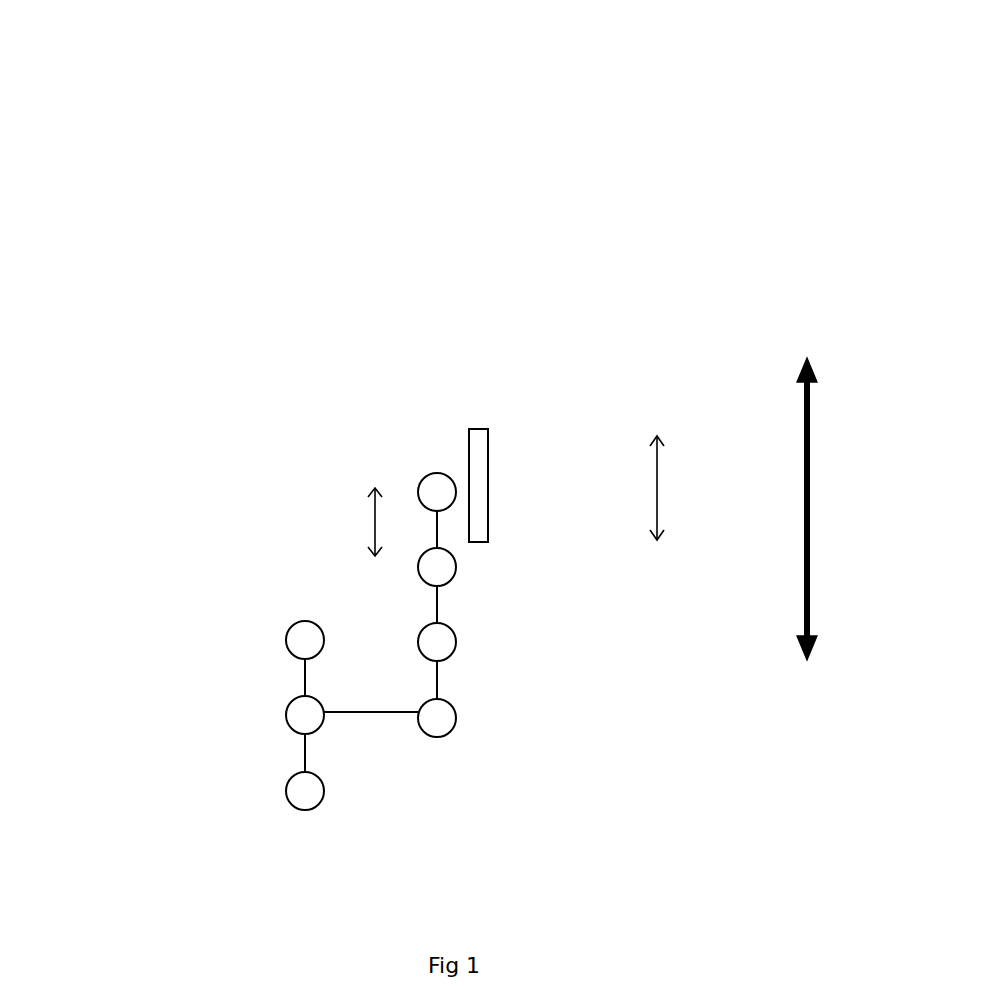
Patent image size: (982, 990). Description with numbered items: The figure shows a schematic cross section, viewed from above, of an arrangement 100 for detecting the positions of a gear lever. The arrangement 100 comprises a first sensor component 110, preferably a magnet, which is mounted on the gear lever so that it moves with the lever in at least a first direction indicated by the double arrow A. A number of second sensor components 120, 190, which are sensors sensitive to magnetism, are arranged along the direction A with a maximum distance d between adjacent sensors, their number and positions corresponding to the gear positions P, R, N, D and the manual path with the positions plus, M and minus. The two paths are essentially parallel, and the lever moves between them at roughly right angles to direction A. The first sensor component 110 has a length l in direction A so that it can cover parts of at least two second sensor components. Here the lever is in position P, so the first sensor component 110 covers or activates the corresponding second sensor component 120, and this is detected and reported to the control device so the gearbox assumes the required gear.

The arrangement 100 is at (166, 174).
The first sensor component 110 is at (490, 398).
The second sensor component 120 is at (420, 455).
The second sensor component 190 is at (283, 831).